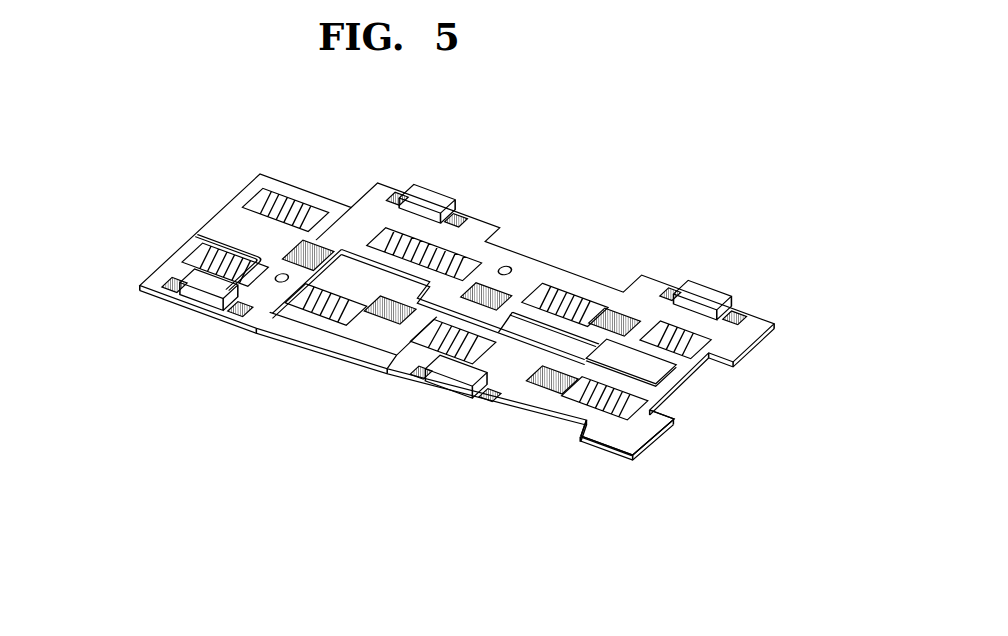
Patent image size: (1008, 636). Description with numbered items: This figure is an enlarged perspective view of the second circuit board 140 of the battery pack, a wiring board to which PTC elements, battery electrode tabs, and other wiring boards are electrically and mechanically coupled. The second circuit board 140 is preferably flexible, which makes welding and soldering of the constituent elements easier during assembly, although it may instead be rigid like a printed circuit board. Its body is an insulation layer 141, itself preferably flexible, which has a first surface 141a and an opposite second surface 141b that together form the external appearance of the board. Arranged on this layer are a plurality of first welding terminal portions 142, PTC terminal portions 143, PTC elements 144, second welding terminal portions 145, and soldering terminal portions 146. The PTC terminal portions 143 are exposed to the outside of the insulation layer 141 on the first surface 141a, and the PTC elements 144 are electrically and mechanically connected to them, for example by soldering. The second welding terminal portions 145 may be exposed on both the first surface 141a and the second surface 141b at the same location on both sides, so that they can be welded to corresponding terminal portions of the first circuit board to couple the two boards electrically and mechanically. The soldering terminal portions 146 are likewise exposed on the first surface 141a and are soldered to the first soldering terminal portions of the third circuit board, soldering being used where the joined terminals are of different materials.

The second circuit board 140 is at (150, 237).
The insulation layer 141 is at (713, 537).
The first surface 141a is at (665, 432).
The second surface 141b is at (640, 457).
The first welding terminal portions 142 is at (215, 260).
The PTC terminal portions 143 is at (747, 310).
The PTC elements 144 is at (425, 205).
The second welding terminal portions 145 is at (640, 368).
The soldering terminal portions 146 is at (482, 287).